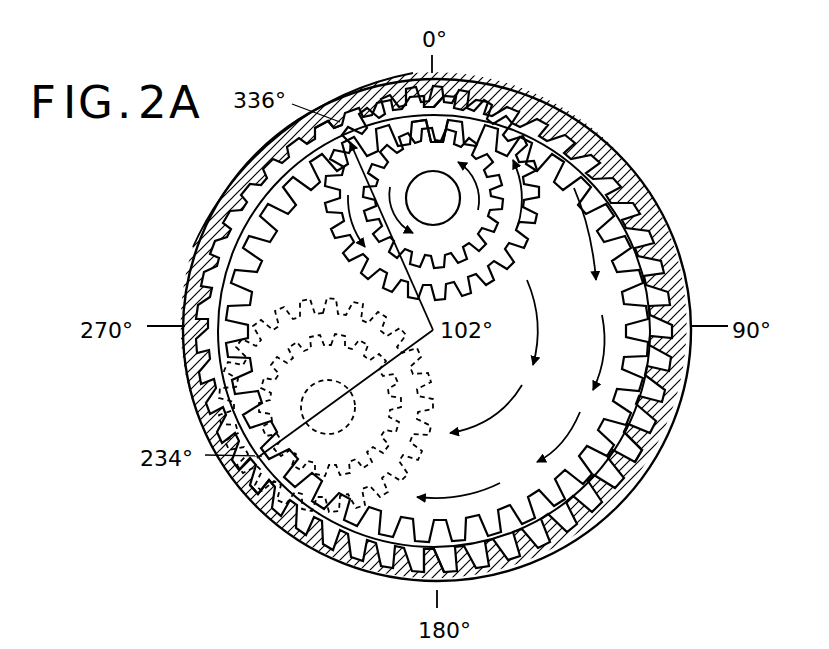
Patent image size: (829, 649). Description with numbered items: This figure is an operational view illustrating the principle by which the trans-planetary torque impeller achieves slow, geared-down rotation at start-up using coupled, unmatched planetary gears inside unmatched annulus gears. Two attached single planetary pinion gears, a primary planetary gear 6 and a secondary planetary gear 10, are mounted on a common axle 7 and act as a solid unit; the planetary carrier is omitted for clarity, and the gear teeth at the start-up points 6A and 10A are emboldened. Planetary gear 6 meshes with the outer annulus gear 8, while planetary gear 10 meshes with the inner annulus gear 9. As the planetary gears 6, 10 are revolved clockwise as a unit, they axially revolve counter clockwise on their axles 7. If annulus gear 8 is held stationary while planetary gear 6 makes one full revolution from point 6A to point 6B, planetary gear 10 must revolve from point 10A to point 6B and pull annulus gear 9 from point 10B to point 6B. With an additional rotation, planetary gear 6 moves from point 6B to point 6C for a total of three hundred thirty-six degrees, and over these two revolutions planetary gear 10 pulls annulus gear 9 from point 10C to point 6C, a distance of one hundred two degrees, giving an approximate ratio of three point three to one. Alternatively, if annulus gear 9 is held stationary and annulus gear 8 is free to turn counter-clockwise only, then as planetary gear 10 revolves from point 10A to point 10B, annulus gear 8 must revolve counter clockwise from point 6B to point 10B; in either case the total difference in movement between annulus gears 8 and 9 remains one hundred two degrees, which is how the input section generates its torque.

The primary planetary pinion gear 6 is at (503, 243).
The start-up point of planetary gear 6 6A is at (438, 93).
The one-revolution point of planetary gear 6 6B is at (485, 556).
The second-revolution point of planetary gear 6 6C is at (335, 118).
The axle 7 is at (433, 198).
The annulus gear 8 is at (205, 250).
The annulus gear 9 is at (246, 252).
The secondary planetary pinion gear 10 is at (448, 169).
The start-up point of planetary gear 10 10A is at (423, 120).
The one-revolution point of planetary gear 10 10B is at (626, 422).
The two-revolution point of planetary gear 10 10C is at (272, 460).